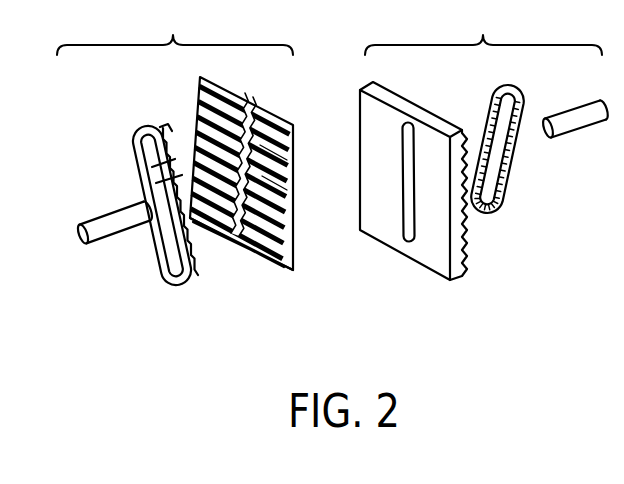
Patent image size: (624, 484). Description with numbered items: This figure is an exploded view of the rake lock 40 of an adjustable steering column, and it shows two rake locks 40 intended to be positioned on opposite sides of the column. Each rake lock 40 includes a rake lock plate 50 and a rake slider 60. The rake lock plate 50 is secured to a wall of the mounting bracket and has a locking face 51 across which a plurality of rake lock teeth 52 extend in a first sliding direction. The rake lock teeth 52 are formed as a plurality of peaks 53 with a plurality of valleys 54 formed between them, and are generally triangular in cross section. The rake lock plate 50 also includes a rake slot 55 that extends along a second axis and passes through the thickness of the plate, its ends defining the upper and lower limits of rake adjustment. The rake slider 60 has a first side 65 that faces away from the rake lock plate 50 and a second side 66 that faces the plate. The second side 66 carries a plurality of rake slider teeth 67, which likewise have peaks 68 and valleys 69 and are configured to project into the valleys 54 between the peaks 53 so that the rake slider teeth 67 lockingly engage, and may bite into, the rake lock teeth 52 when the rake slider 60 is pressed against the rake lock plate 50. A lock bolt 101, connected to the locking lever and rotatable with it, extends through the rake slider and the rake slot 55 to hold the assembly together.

The rake lock 40 is at (329, 30).
The rake lock plate 50 is at (290, 268).
The locking face 51 is at (198, 80).
The rake lock teeth 52 is at (281, 150).
The peaks 53 is at (196, 102).
The valleys 54 is at (197, 125).
The rake slot 55 is at (241, 121).
The rake slider 60 is at (163, 239).
The first side 65 is at (162, 260).
The second side 66 is at (200, 275).
The rake slider teeth 67 is at (517, 181).
The peaks 68 is at (165, 157).
The valleys 69 is at (166, 173).
The lock bolt 101 is at (80, 239).